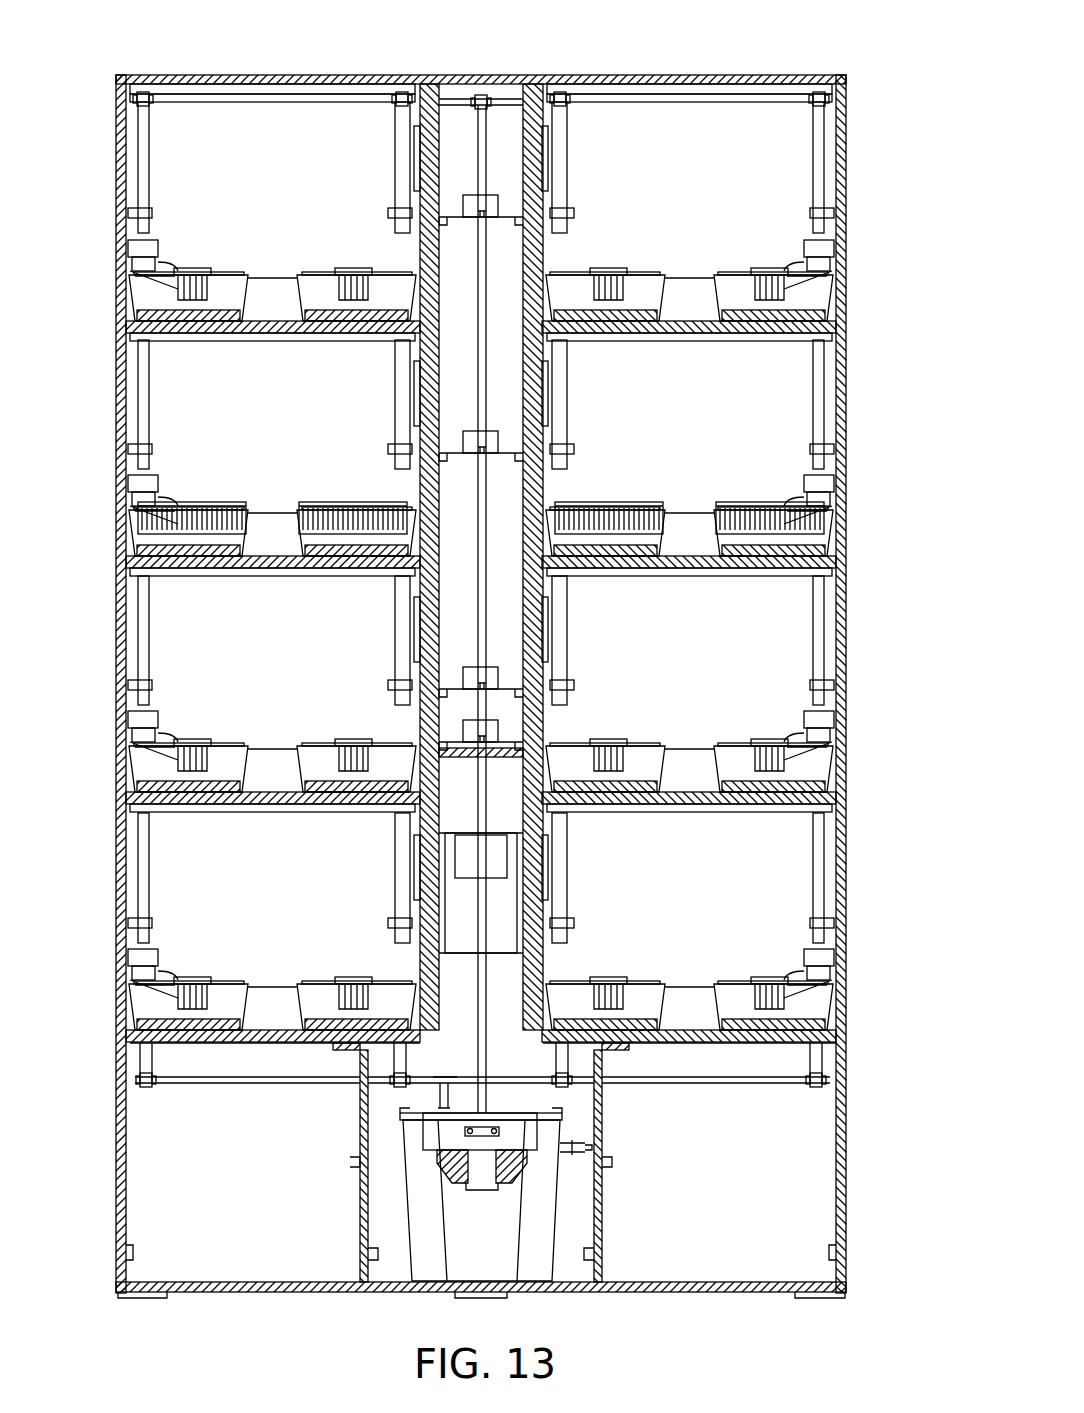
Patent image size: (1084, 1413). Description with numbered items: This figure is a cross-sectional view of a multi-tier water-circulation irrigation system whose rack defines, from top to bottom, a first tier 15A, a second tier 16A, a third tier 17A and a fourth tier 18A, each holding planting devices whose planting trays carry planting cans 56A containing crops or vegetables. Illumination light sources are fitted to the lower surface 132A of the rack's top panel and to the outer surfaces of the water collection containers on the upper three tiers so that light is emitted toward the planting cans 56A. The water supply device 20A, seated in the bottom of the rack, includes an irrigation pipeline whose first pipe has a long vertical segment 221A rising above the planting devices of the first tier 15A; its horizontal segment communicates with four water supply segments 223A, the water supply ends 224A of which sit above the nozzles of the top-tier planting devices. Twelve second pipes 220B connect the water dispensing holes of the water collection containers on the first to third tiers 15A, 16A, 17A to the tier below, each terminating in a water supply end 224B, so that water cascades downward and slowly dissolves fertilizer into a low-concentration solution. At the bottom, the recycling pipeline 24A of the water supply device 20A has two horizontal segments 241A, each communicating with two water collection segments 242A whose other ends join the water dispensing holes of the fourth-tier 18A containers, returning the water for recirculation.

The first tier 15A is at (852, 284).
The second tier 16A is at (852, 537).
The third tier 17A is at (852, 772).
The fourth tier 18A is at (852, 1007).
The water supply device 20A is at (566, 1226).
The recycling pipeline 24A is at (768, 1092).
The planting can 56A is at (185, 268).
The lower surface of the top panel 132A is at (712, 113).
The second pipe 220B is at (403, 383).
The vertical segment of the first pipe 221A is at (487, 142).
The water supply segment 223A is at (143, 156).
The water supply end 224A is at (143, 230).
The water supply end 224B is at (395, 455).
The horizontal segment 241A is at (265, 1082).
The water collection segment 242A is at (145, 1059).